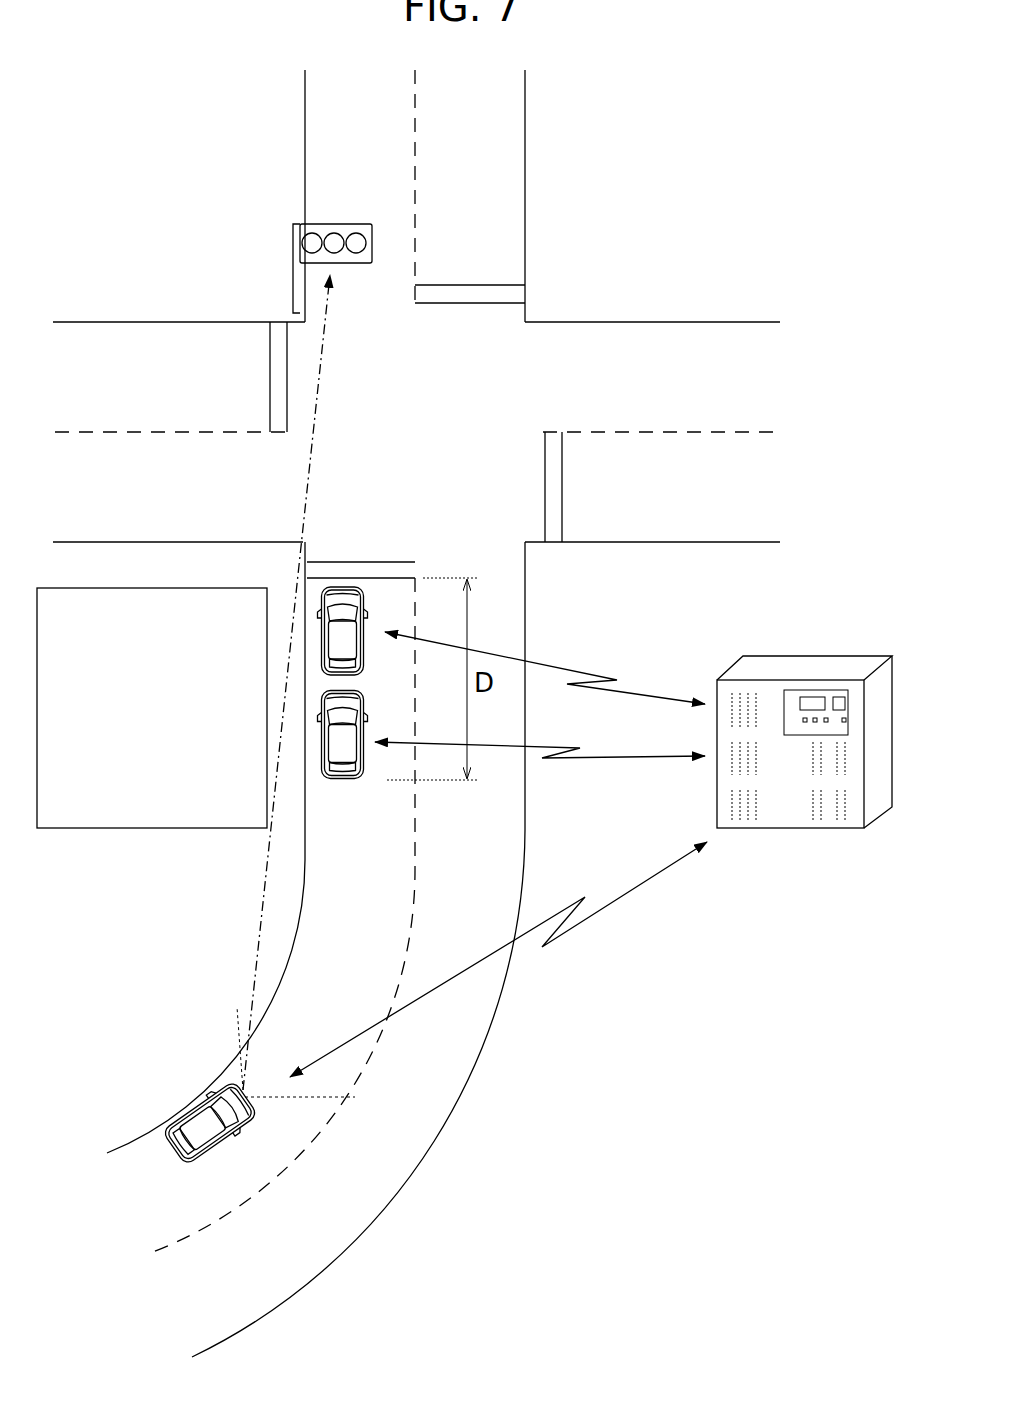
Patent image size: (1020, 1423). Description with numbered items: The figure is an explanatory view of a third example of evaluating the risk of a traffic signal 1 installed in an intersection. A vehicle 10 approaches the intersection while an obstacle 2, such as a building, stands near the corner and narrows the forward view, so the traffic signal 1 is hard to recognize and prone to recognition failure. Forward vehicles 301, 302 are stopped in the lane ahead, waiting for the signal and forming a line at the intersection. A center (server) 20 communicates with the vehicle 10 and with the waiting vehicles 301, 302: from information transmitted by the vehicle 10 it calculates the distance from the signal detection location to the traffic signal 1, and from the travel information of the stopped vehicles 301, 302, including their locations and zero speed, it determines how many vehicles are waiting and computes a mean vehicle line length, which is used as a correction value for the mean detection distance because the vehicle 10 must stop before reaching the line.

The traffic signal 1 is at (337, 223).
The obstacle 2 is at (162, 720).
The vehicle 10 is at (177, 1153).
The center (server) 20 is at (817, 663).
The vehicle 301 is at (342, 597).
The vehicle 302 is at (343, 778).